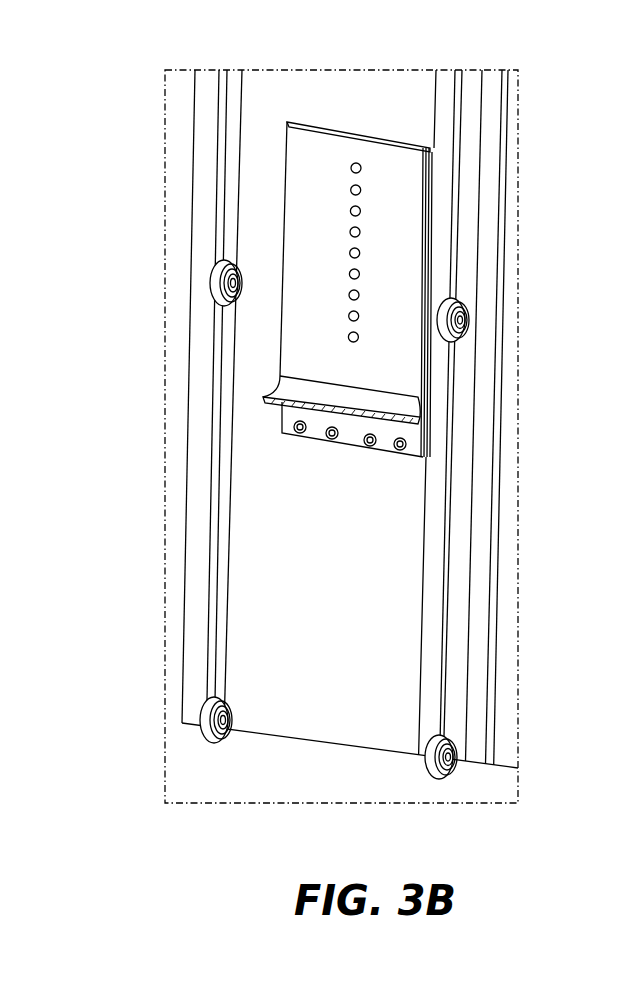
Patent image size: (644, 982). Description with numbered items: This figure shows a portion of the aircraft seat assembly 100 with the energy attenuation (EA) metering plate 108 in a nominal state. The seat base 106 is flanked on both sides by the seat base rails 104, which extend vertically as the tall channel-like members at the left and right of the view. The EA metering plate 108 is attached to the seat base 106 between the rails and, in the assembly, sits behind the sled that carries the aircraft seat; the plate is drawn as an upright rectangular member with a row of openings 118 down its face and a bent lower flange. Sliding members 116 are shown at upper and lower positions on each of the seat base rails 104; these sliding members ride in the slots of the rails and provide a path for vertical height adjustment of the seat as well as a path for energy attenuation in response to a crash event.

The aircraft seat assembly 100 is at (175, 58).
The seat base rails 104 is at (458, 545).
The seat base 106 is at (302, 585).
The EA metering plate 108 is at (319, 352).
The sliding members 116 is at (214, 277).
The mounting hole 118 is at (359, 251).